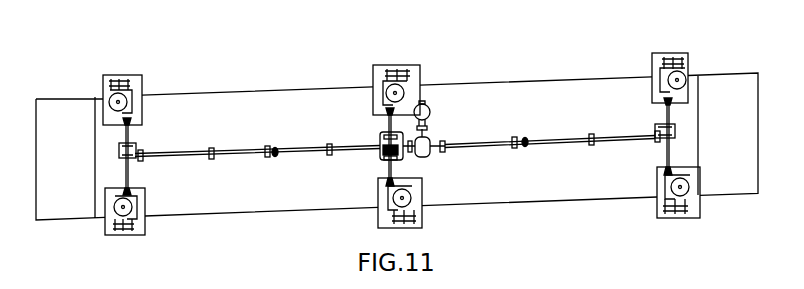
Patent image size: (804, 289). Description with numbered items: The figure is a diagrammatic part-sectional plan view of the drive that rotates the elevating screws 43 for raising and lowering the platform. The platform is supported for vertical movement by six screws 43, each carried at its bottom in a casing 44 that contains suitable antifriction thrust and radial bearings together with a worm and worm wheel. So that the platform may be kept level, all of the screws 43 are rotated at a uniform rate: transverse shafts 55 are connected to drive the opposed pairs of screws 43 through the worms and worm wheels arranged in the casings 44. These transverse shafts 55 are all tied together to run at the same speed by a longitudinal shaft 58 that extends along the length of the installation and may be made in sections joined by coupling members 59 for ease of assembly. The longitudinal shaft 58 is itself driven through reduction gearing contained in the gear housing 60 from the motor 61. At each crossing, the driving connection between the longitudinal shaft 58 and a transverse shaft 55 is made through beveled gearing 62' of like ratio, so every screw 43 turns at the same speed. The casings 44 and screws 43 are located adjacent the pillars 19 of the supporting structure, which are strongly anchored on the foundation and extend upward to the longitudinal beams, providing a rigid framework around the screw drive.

The pillars 19 is at (120, 83).
The screws 43 is at (128, 100).
The casing 44 is at (112, 105).
The transverse shafts 55 is at (128, 176).
The longitudinal shaft 58 is at (305, 150).
The coupling members 59 is at (275, 150).
The gear housing 60 is at (428, 137).
The motor 61 is at (429, 110).
The beveled gearing 62' is at (412, 143).